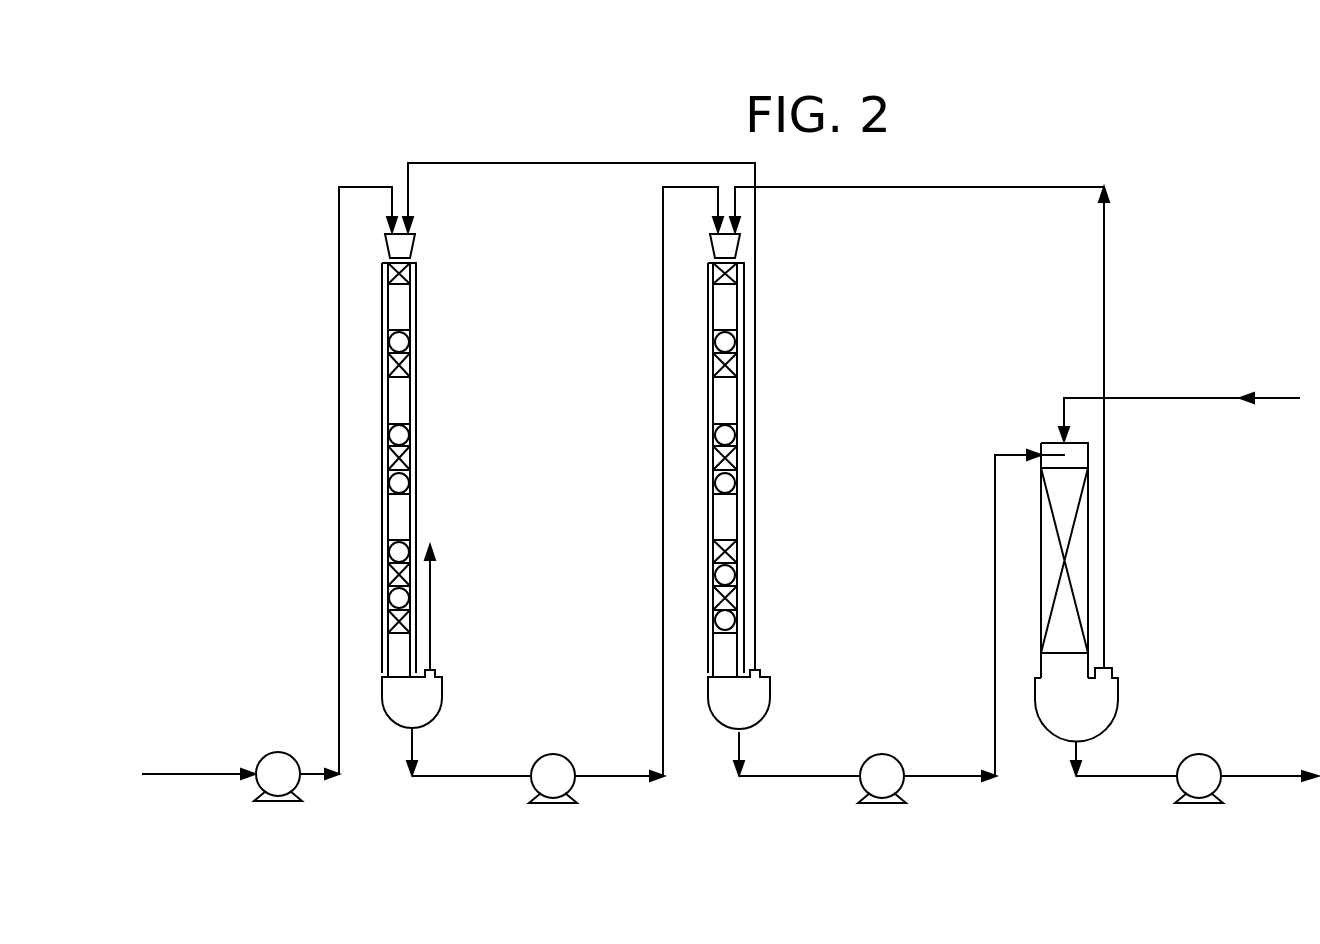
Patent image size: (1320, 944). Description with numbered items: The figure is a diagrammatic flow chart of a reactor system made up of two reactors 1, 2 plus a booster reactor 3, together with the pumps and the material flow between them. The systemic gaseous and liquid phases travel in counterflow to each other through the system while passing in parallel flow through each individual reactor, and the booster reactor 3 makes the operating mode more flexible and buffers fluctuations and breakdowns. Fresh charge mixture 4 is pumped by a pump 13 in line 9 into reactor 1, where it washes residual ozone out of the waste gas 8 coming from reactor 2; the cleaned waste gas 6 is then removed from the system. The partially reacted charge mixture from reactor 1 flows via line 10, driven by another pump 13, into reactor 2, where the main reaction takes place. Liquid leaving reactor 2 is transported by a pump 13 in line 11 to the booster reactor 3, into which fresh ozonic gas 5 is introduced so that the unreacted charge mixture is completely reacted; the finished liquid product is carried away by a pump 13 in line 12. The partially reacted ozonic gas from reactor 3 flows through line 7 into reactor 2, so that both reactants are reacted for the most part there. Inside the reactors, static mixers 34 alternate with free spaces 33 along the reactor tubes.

The reactor 1 is at (425, 697).
The reactor 2 is at (757, 702).
The booster reactor 3 is at (1104, 703).
The charge mixture 4 is at (215, 772).
The ozonic gas 5 is at (1212, 397).
The waste gas 6 is at (430, 600).
The line 7 is at (1102, 297).
The waste gas 8 is at (757, 438).
The line 9 is at (338, 344).
The line 10 is at (663, 356).
The line 11 is at (836, 777).
The line 12 is at (1253, 777).
The pump 13 is at (279, 752).
The free space 33 is at (405, 518).
The static mixer 34 is at (411, 457).